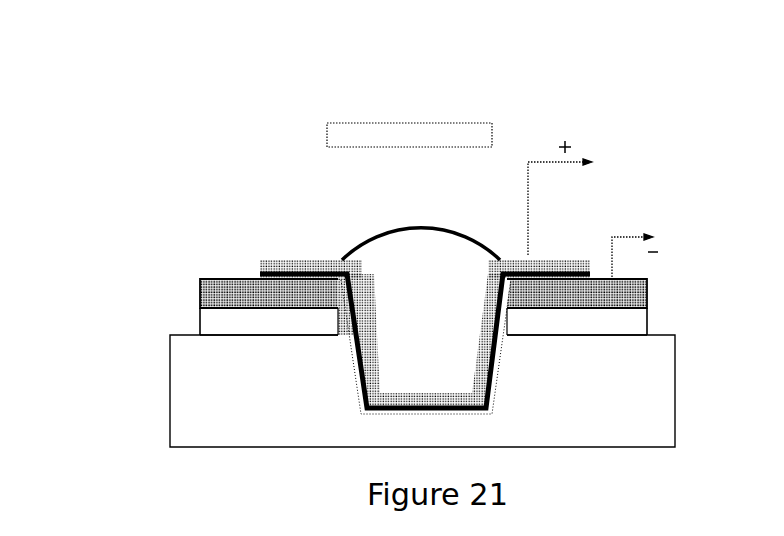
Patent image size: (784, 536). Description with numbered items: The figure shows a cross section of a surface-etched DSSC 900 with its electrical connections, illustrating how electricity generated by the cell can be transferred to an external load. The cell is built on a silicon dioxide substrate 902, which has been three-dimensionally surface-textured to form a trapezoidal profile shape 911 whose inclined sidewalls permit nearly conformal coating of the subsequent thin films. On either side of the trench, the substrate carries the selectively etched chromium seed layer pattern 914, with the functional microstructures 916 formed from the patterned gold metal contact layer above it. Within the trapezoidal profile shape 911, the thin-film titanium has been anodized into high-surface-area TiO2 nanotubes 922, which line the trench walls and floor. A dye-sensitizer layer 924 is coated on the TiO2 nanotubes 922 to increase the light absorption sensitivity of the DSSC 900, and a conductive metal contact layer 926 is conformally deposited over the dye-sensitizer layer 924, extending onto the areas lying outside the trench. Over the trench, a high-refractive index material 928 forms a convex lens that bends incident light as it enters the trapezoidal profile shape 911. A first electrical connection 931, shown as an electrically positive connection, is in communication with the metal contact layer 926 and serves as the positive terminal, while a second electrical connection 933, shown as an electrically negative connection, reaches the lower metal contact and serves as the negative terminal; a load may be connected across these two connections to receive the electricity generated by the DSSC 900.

The DSSC 900 is at (378, 282).
The silicon dioxide substrate 902 is at (619, 454).
The trapezoidal profile shape 911 is at (413, 359).
The chromium seed layer pattern 914 is at (189, 318).
The functional microstructures 916 is at (189, 286).
The TiO2 nanotubes 922 is at (346, 394).
The dye-sensitizer layer 924 is at (254, 263).
The metal contact layer 926 is at (275, 250).
The high-refractive index material 928 is at (411, 222).
The first electrical connection 931 is at (603, 146).
The second electrical connection 933 is at (660, 224).